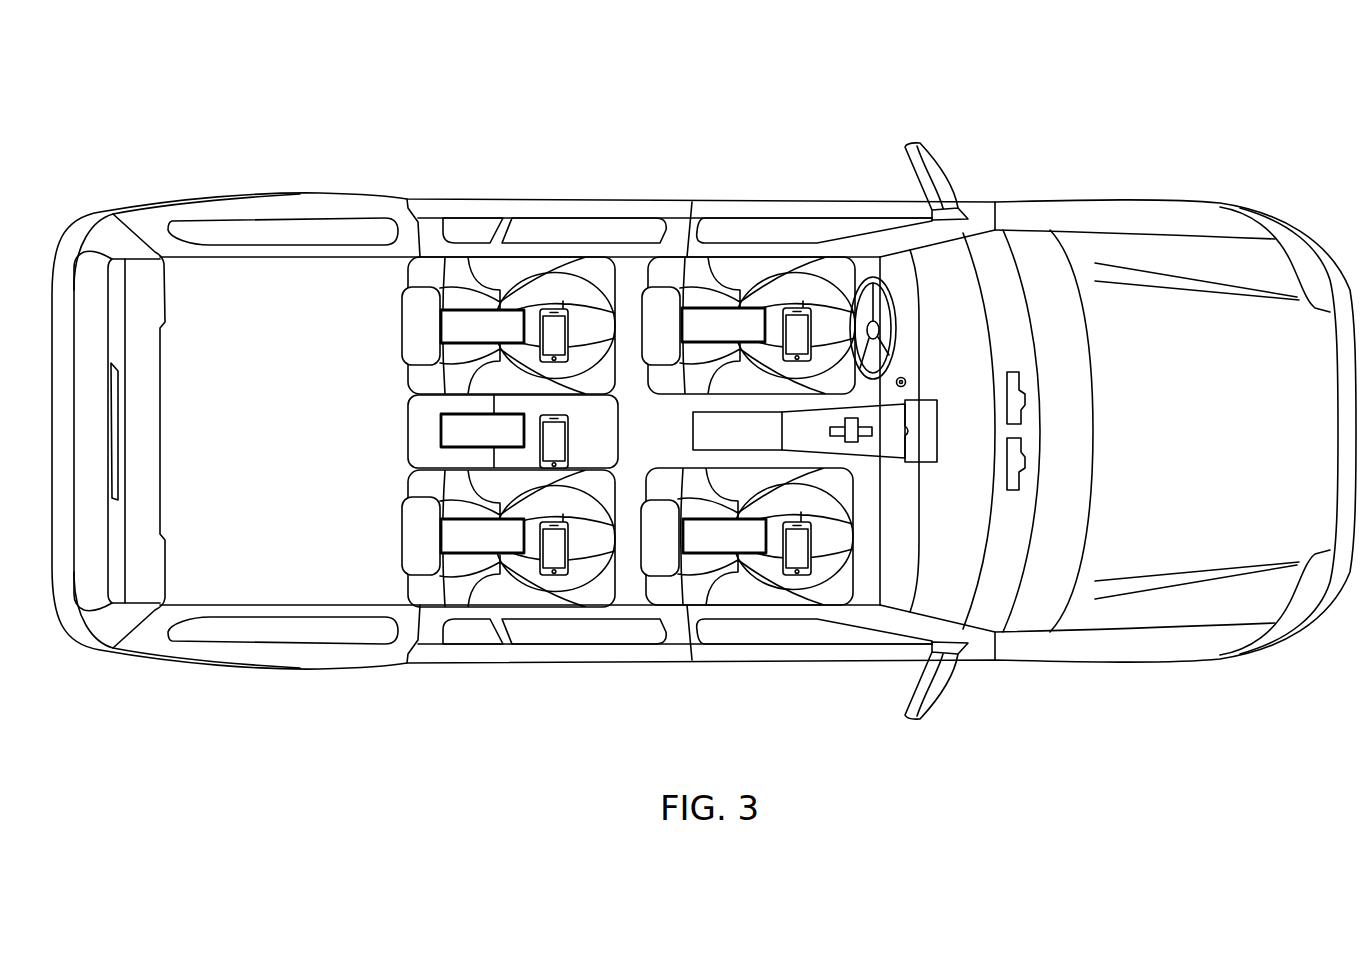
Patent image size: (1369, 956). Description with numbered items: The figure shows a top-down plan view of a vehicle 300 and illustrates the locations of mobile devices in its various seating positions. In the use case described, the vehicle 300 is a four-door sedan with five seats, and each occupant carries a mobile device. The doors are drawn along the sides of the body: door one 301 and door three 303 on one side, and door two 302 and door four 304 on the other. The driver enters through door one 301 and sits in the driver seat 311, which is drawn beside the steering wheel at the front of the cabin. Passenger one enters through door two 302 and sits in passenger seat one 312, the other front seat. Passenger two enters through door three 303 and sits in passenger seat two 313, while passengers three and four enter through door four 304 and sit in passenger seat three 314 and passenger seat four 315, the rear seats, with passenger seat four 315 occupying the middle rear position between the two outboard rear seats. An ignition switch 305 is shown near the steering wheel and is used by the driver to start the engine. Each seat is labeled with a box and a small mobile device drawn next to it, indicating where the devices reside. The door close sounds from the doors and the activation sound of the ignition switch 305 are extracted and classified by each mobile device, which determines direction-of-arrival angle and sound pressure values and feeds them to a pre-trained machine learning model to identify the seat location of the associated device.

The vehicle 300 is at (1132, 97).
The door one 301 is at (768, 200).
The door two 302 is at (768, 660).
The door three 303 is at (511, 200).
The door four 304 is at (511, 662).
The ignition switch 305 is at (903, 378).
The driver seat 311 is at (697, 318).
The passenger seat one 312 is at (697, 543).
The passenger seat two 313 is at (452, 327).
The passenger seat three 314 is at (452, 535).
The passenger seat four 315 is at (452, 430).